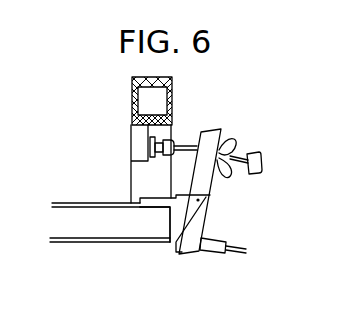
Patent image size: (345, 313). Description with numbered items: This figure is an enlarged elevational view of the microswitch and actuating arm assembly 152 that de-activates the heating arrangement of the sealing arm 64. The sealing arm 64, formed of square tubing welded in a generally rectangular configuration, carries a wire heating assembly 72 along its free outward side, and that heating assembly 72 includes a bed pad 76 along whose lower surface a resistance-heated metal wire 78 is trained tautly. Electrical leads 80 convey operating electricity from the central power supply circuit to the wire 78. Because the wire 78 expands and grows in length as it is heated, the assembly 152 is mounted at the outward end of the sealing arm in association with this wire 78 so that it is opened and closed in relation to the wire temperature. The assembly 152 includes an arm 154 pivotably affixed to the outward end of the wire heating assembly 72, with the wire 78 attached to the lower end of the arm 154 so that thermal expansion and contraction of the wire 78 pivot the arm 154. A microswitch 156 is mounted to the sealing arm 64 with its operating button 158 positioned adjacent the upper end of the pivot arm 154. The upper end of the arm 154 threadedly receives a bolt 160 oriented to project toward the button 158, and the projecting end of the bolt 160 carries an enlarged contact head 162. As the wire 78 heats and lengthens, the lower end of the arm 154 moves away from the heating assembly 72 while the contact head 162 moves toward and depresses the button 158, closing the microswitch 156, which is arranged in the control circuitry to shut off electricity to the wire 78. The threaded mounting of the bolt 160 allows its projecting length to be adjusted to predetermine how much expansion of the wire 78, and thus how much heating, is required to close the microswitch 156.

The sealing arm assembly 64 is at (132, 102).
The wire heating assembly 72 is at (85, 220).
The bed pad 76 is at (111, 222).
The resistance-heated metal wire 78 is at (148, 243).
The electrical leads 80 is at (235, 256).
The microswitch and actuating arm assembly 152 is at (235, 210).
The arm 154 is at (212, 189).
The microswitch 156 is at (131, 148).
The operating button 158 is at (160, 157).
The bolt 160 is at (186, 150).
The contact head 162 is at (175, 140).